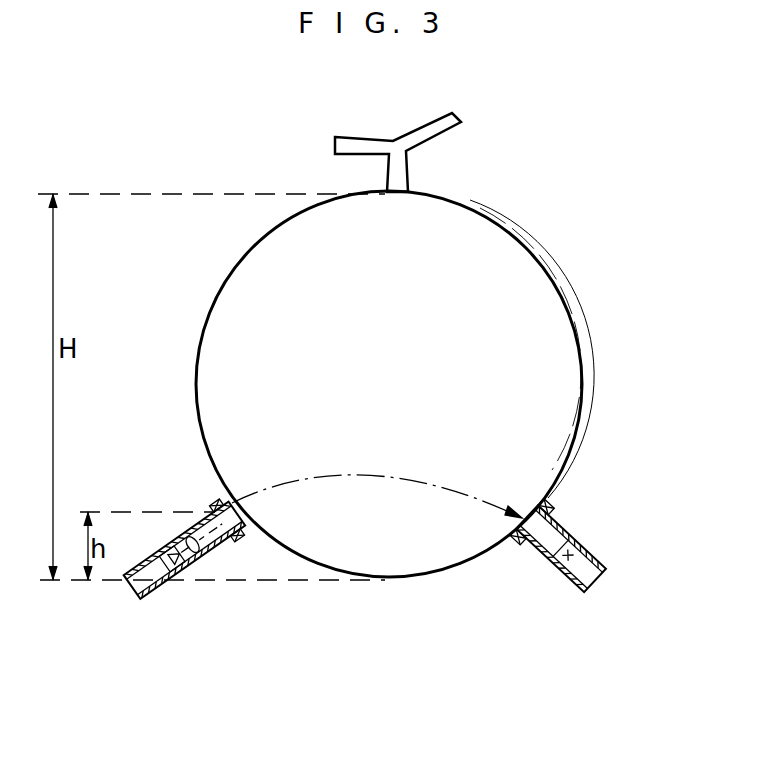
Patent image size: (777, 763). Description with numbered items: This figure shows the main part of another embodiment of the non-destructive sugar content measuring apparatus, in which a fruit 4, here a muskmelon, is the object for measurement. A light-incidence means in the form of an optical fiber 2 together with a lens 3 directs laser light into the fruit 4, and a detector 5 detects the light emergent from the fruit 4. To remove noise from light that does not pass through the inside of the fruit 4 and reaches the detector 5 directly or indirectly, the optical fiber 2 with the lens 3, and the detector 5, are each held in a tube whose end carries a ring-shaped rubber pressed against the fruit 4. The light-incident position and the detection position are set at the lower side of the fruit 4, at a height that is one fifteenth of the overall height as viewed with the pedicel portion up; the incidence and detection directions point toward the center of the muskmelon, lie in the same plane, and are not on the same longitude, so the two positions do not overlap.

The optical fiber 2 is at (187, 551).
The lens 3 is at (210, 557).
The fruit 4 is at (573, 445).
The detector 5 is at (587, 545).